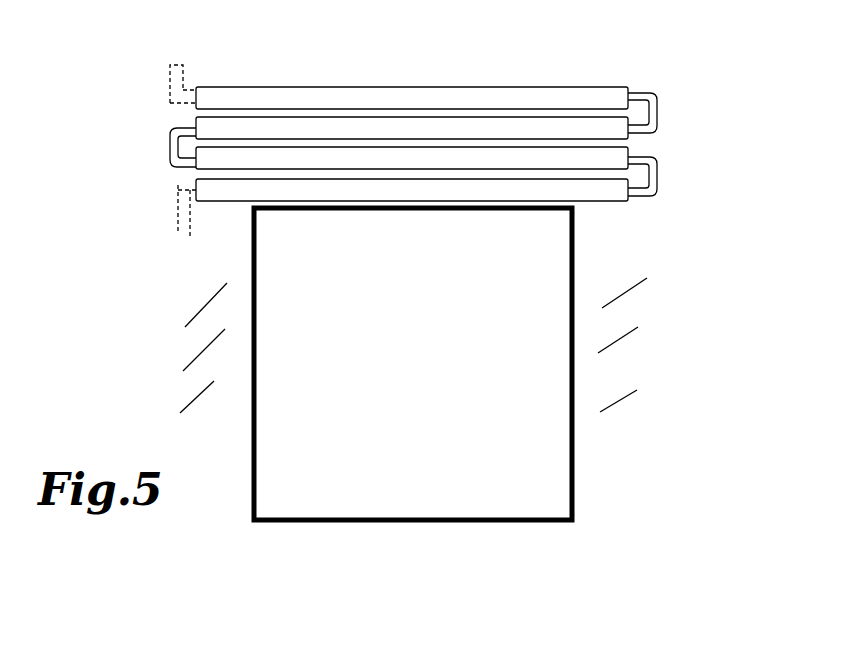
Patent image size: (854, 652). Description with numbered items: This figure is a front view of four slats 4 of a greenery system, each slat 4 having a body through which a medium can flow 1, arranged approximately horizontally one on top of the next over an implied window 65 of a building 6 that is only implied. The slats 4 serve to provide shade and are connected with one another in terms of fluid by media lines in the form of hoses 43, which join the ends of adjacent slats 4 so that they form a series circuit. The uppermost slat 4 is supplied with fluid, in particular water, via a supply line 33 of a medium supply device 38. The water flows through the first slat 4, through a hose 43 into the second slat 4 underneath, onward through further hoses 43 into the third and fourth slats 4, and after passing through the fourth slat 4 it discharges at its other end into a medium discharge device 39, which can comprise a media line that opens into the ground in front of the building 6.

The body through which a medium can flow 1 is at (607, 98).
The slat 4 is at (206, 90).
The building 6 is at (454, 364).
The supply line 33 is at (177, 77).
The medium supply device 38 is at (164, 54).
The medium discharge device 39 is at (172, 228).
The hose 43 is at (172, 157).
The window 65 is at (547, 273).